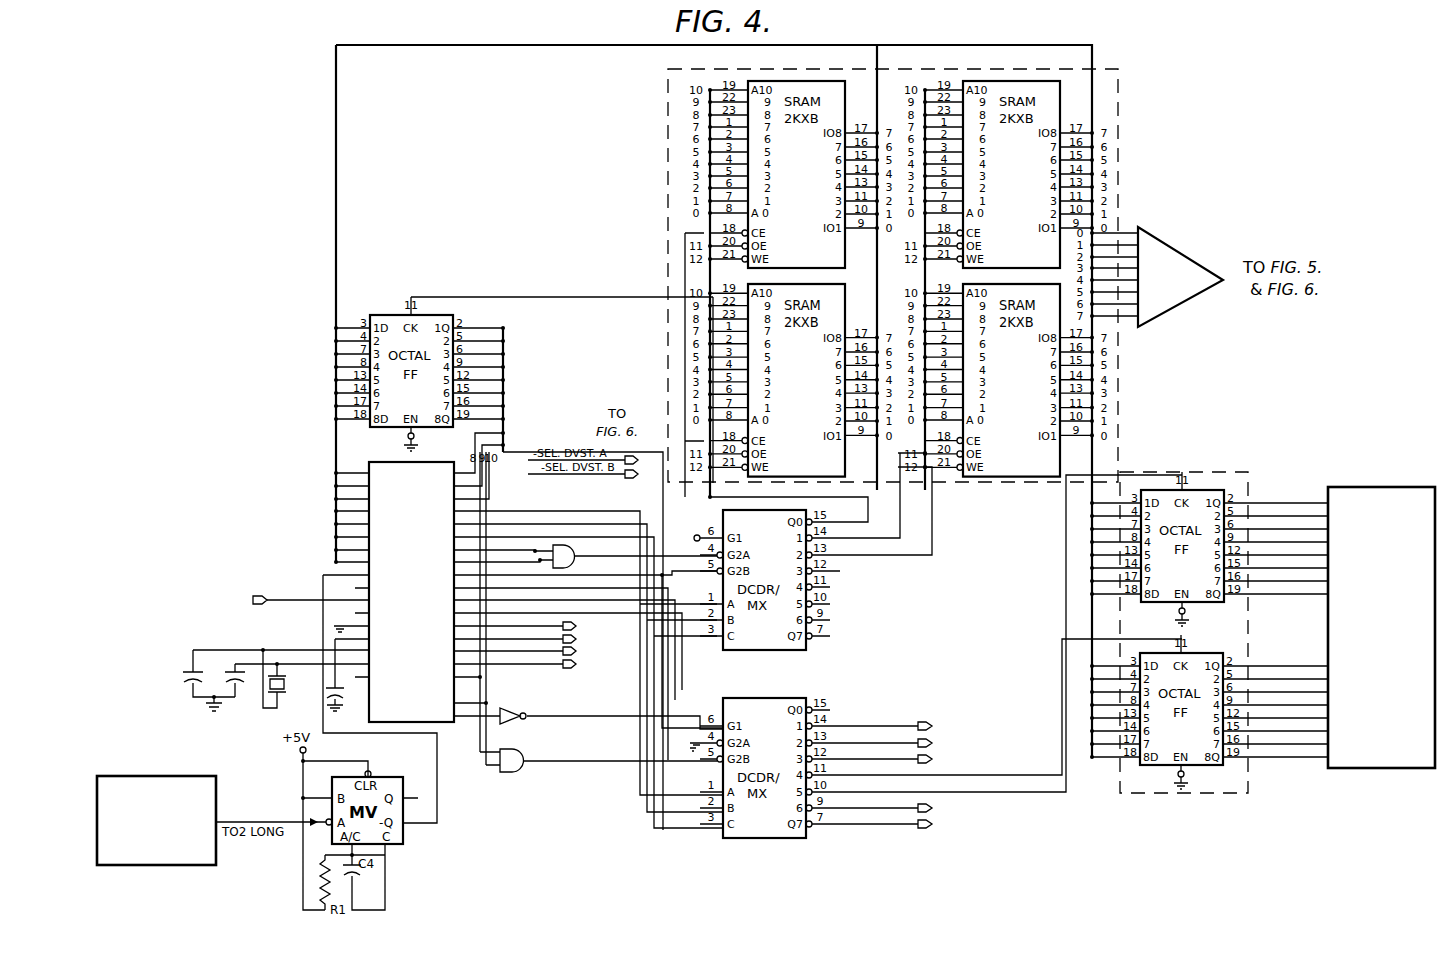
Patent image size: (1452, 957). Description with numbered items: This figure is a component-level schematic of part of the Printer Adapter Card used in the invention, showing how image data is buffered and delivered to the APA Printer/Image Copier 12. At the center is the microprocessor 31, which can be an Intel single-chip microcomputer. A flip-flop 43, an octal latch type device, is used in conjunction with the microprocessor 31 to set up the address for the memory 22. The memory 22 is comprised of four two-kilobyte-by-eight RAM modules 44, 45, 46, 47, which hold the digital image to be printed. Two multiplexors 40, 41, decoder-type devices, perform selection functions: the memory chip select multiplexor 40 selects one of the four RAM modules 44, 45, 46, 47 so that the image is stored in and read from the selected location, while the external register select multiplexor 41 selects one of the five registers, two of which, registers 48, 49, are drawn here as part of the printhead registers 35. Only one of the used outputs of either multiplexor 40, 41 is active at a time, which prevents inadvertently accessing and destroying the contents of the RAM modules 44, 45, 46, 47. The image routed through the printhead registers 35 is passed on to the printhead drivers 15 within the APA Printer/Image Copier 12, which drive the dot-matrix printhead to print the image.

The APA Printer/Image Copier 12 is at (149, 776).
The printhead drivers 15 is at (1404, 487).
The memory 22 is at (1118, 96).
The microprocessor 31 is at (455, 733).
The printhead registers 35 is at (1228, 472).
The memory chip select multiplexor 40 is at (790, 647).
The external register select multiplexor 41 is at (780, 840).
The flip-flop 43 is at (388, 315).
The RAM module 44 is at (811, 256).
The RAM module 45 is at (811, 464).
The RAM module 46 is at (1026, 256).
The RAM module 47 is at (1026, 464).
The register 48 is at (1205, 605).
The register 49 is at (1208, 765).